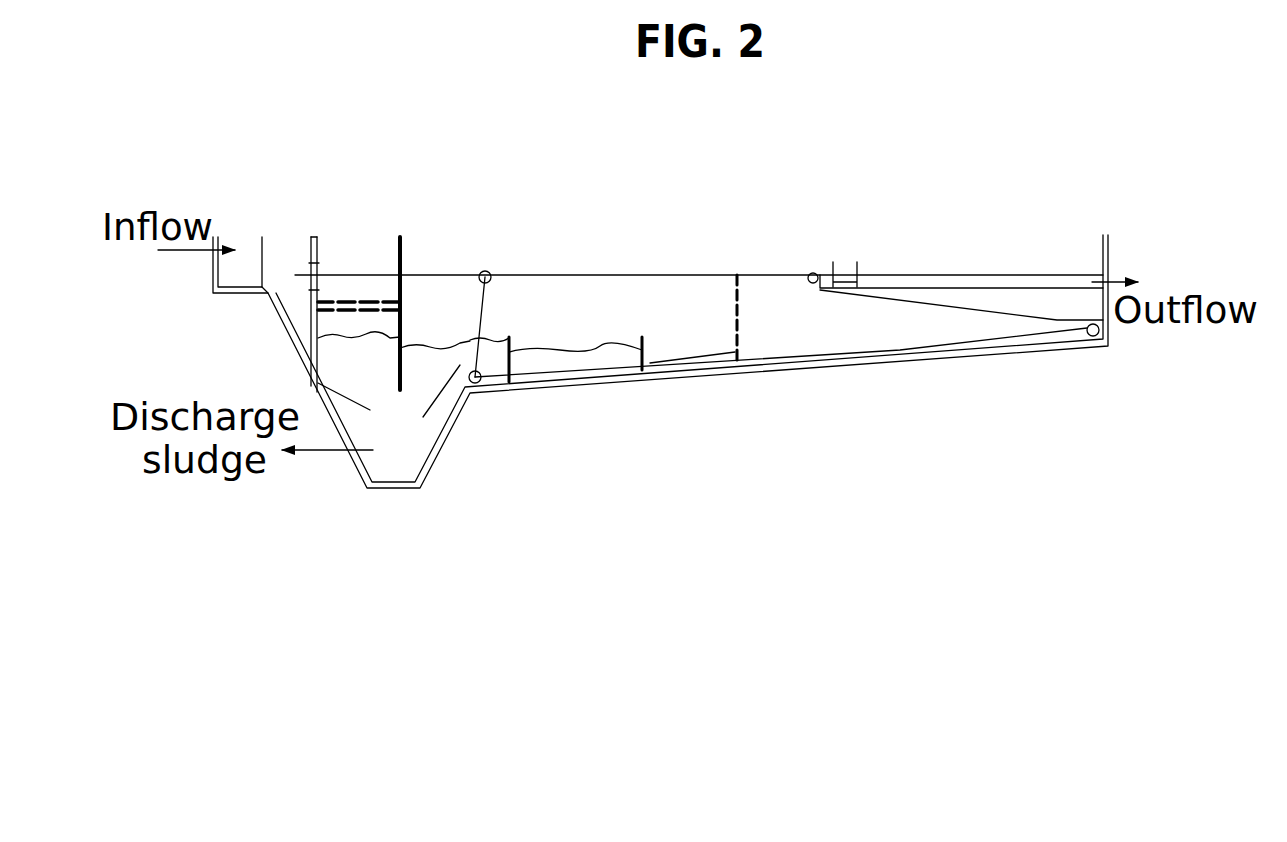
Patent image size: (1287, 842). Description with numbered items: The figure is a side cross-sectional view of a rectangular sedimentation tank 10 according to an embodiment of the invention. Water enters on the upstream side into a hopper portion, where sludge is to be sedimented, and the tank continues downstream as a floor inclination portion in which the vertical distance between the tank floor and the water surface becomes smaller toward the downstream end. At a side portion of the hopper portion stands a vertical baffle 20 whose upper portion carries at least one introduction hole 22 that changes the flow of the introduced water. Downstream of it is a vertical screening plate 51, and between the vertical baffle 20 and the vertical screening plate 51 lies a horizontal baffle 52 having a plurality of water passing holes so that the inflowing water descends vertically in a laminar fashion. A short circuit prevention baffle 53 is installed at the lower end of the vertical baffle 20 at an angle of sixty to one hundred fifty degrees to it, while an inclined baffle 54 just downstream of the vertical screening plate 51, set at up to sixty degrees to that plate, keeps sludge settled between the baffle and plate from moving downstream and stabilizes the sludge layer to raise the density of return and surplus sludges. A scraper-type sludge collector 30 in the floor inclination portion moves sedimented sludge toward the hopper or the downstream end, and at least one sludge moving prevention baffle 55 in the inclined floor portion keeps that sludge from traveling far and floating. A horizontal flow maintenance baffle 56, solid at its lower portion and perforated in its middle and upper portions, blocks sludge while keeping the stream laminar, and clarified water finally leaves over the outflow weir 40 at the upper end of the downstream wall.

The rectangular sedimentation tank 10 is at (798, 366).
The vertical baffle 20 is at (305, 236).
The introduction hole 22 is at (318, 272).
The sludge collector 30 is at (520, 273).
The outflow weir 40 is at (1017, 271).
The vertical screening plate 51 is at (403, 268).
The horizontal baffle 52 is at (365, 298).
The short circuit prevention baffle 53 is at (352, 403).
The inclined baffle 54 is at (447, 400).
The sludge moving prevention baffle 55 is at (731, 353).
The horizontal flow maintenance baffle 56 is at (735, 297).